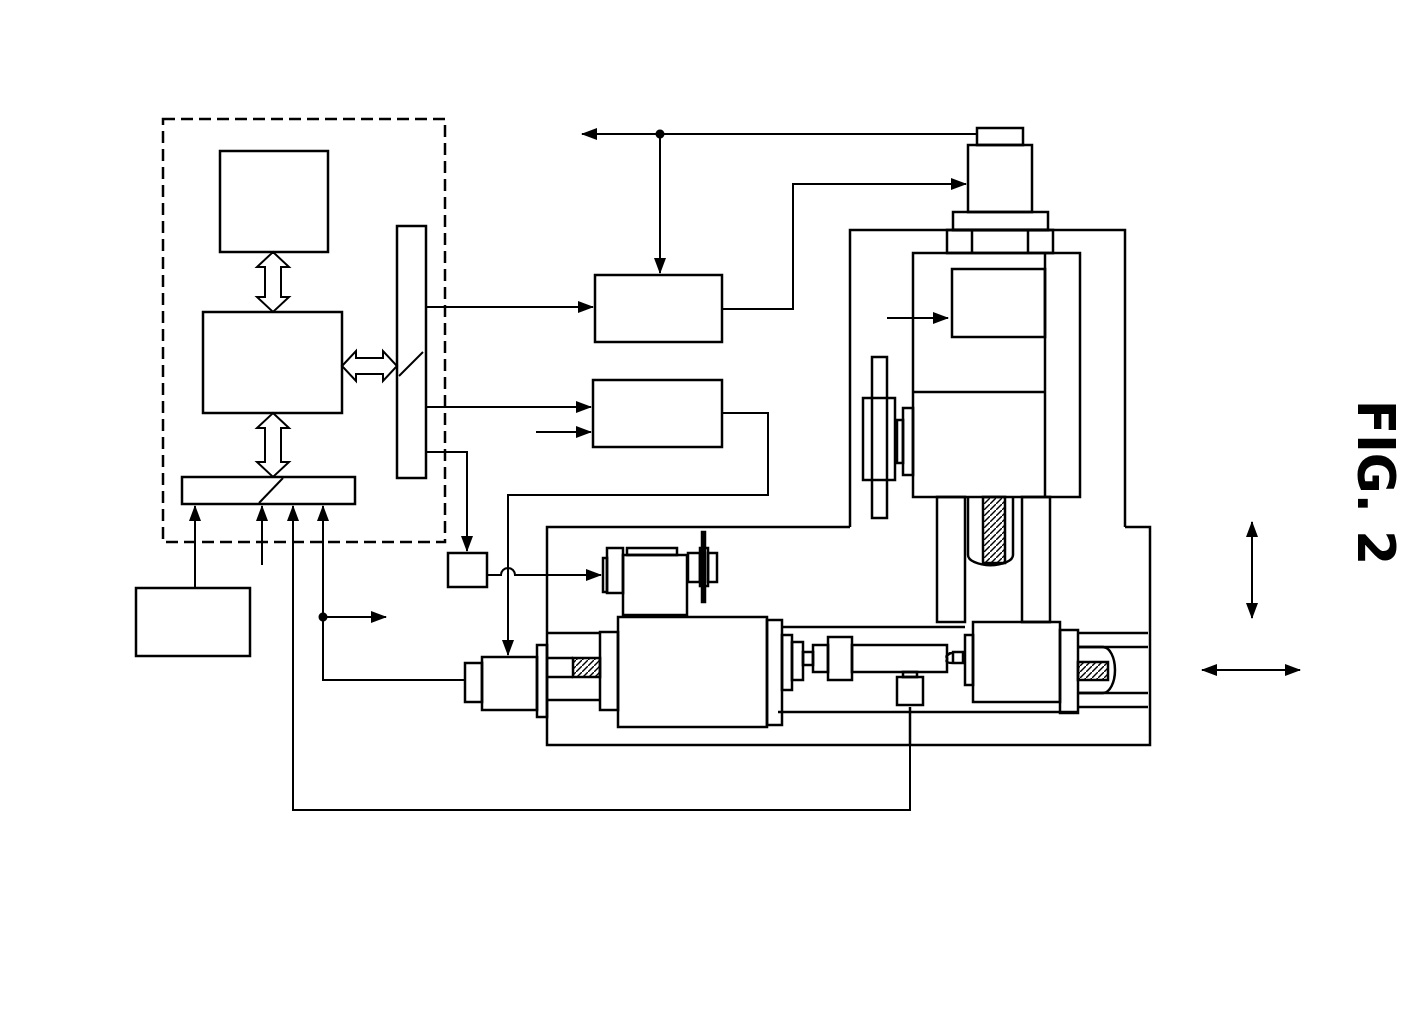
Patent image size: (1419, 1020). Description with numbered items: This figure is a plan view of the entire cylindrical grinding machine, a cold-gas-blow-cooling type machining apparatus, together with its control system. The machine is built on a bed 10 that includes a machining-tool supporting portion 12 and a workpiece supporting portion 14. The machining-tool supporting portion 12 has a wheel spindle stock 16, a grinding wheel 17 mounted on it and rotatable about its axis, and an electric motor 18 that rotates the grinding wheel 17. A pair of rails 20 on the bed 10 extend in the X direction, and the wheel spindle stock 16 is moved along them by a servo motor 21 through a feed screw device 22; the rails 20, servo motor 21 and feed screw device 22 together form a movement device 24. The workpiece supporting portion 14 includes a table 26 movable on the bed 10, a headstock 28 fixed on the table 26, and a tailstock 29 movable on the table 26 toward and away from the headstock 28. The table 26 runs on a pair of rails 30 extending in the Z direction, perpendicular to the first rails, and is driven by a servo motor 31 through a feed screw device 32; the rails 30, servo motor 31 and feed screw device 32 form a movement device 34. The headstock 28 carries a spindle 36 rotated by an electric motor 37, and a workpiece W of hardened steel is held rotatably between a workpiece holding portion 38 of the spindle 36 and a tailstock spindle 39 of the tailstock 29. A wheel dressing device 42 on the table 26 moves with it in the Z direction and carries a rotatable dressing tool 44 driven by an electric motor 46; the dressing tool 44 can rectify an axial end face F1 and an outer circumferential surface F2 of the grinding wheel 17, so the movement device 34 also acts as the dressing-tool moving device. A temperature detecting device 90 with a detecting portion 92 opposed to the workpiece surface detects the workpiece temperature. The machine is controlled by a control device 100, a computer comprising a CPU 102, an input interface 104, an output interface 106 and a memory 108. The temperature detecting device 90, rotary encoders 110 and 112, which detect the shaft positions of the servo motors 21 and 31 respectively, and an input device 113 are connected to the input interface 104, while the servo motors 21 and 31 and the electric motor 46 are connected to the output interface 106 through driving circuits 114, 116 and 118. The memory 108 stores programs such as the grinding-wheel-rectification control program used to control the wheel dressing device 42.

The bed 10 is at (1112, 355).
The machining-tool supporting portion 12 is at (1095, 276).
The workpiece supporting portion 14 is at (1052, 724).
The wheel spindle stock 16 is at (1062, 432).
The grinding wheel 17 is at (878, 375).
The electric motor 18 is at (963, 293).
The rails 20 is at (1040, 532).
The servo motor 21 is at (1013, 172).
The feed screw device 22 is at (1026, 518).
The movement device 24 is at (1129, 575).
The table 26 is at (1070, 688).
The headstock 28 is at (747, 707).
The tailstock 29 is at (1022, 690).
The rails 30 is at (1137, 643).
The servo motor 31 is at (507, 700).
The feed screw device 32 is at (558, 678).
The movement device 34 is at (577, 710).
The spindle 36 is at (782, 690).
The electric motor 37 is at (608, 692).
The workpiece holding portion 38 is at (800, 672).
The tailstock spindle 39 is at (960, 690).
The wheel dressing device 42 is at (655, 631).
The dressing tool 44 is at (706, 532).
The electric motor 46 is at (618, 553).
The temperature detecting device 90 is at (879, 696).
The detecting portion 92 is at (925, 705).
The control device 100 is at (445, 197).
The CPU 102 is at (310, 323).
The input interface 104 is at (313, 481).
The output interface 106 is at (413, 232).
The memory 108 is at (322, 186).
The rotary encoder 110 is at (983, 140).
The rotary encoder 112 is at (465, 668).
The input device 113 is at (170, 648).
The driving circuit 114 is at (723, 294).
The driving circuit 116 is at (723, 398).
The driving circuit 118 is at (457, 577).
The workpiece W is at (872, 655).
The axial end face F1 is at (871, 505).
The outer circumferential surface F2 is at (878, 520).
The X-axis direction X is at (1267, 570).
The Z-axis direction Z is at (1251, 690).